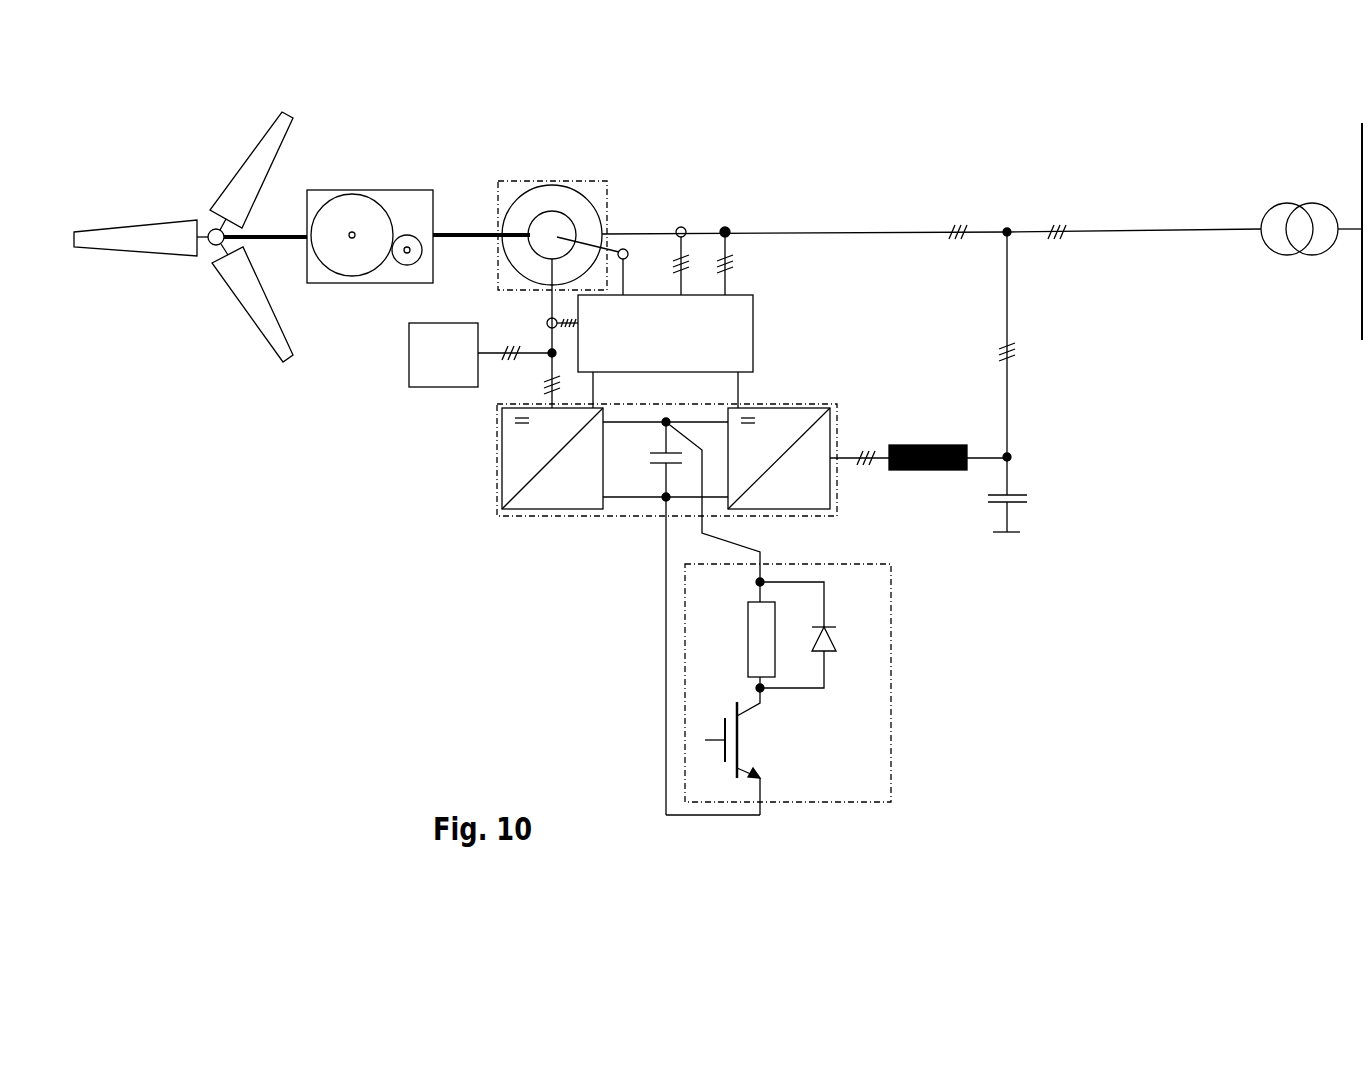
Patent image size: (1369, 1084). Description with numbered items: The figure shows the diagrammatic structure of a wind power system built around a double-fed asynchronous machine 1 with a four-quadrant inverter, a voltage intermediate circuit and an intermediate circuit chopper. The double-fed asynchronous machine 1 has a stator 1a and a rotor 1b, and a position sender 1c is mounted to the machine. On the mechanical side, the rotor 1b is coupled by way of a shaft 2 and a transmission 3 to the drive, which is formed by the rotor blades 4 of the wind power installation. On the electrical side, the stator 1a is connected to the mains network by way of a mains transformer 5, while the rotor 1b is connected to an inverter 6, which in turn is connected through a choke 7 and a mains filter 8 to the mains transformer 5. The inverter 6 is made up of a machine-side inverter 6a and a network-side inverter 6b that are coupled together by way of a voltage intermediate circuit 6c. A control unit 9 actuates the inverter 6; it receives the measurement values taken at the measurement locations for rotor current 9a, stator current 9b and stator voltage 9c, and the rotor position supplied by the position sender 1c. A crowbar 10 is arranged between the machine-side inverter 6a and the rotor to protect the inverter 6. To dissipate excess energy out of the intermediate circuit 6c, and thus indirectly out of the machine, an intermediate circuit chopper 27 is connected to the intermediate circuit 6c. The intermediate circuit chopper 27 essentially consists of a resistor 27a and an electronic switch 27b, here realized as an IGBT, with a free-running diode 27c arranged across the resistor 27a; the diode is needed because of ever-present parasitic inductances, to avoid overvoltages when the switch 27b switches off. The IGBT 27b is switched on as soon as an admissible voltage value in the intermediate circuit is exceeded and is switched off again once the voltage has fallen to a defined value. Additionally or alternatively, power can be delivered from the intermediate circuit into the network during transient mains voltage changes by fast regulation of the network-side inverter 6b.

The double-fed asynchronous machine 1 is at (577, 226).
The stator 1a is at (552, 235).
The rotor 1b is at (552, 235).
The position sender 1c is at (606, 266).
The shaft 2 is at (481, 223).
The transmission 3 is at (370, 236).
The rotor blades 4 is at (183, 237).
The mains transformer 5 is at (1299, 229).
The inverter 6 is at (667, 476).
The machine-side inverter 6a is at (552, 458).
The network-side inverter 6b is at (779, 458).
The voltage intermediate circuit 6c is at (657, 459).
The choke 7 is at (918, 442).
The mains filter 8 is at (1013, 494).
The control unit 9 is at (665, 351).
The rotor current measurement location 9a is at (548, 323).
The stator current measurement location 9b is at (673, 249).
The stator voltage measurement location 9c is at (731, 249).
The crowbar 10 is at (480, 355).
The intermediate circuit chopper 27 is at (823, 689).
The resistor 27a is at (736, 635).
The electronic switch 27b is at (747, 751).
The free-running diode 27c is at (820, 635).